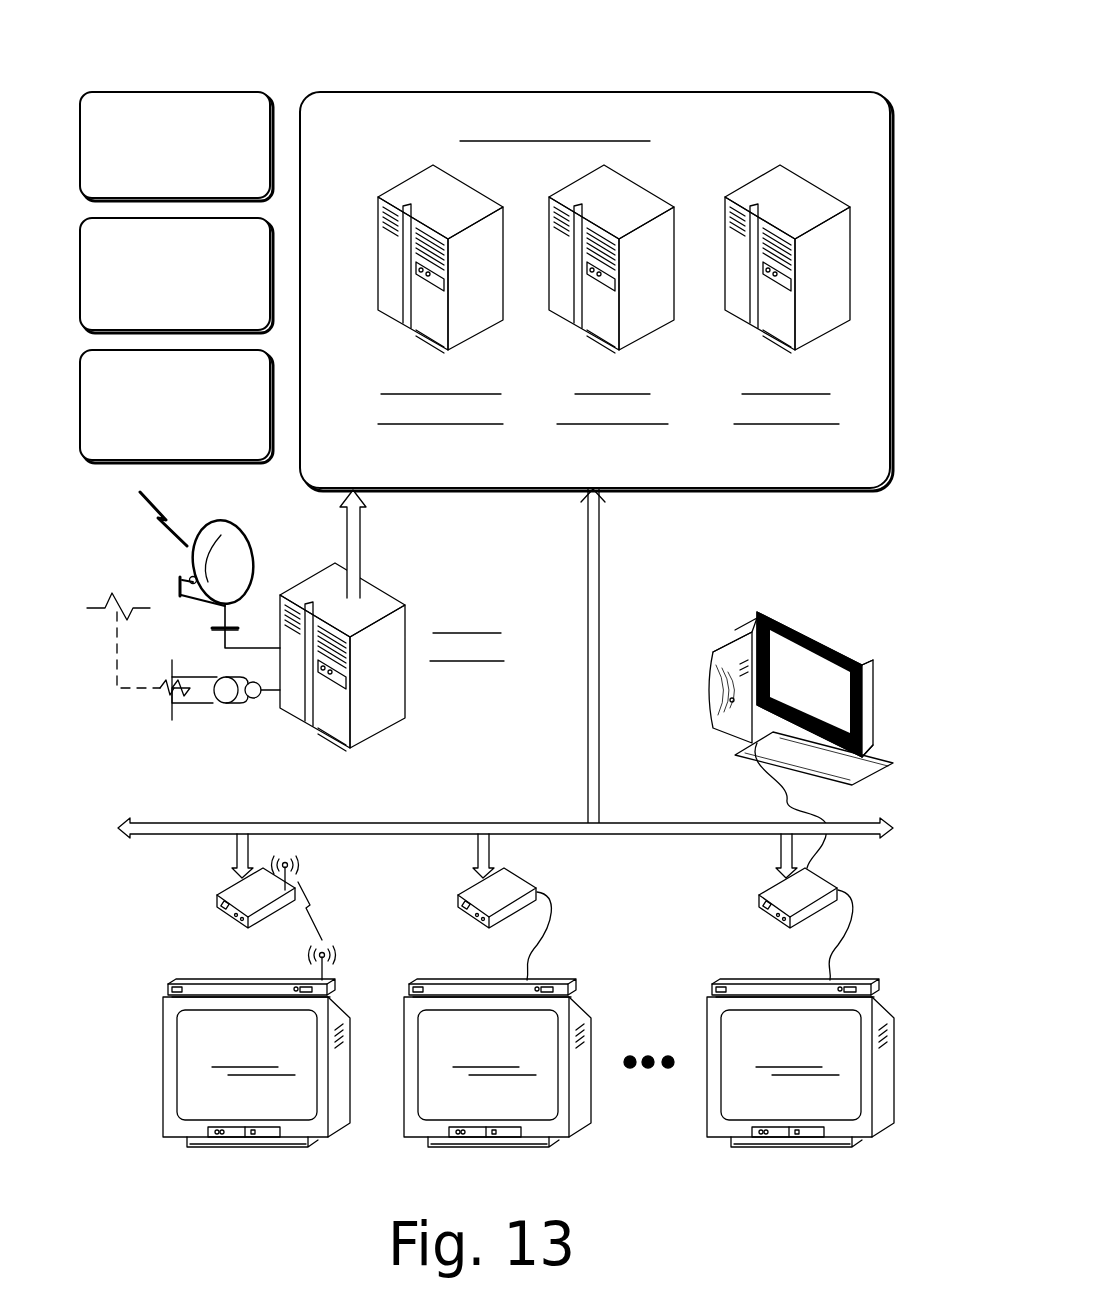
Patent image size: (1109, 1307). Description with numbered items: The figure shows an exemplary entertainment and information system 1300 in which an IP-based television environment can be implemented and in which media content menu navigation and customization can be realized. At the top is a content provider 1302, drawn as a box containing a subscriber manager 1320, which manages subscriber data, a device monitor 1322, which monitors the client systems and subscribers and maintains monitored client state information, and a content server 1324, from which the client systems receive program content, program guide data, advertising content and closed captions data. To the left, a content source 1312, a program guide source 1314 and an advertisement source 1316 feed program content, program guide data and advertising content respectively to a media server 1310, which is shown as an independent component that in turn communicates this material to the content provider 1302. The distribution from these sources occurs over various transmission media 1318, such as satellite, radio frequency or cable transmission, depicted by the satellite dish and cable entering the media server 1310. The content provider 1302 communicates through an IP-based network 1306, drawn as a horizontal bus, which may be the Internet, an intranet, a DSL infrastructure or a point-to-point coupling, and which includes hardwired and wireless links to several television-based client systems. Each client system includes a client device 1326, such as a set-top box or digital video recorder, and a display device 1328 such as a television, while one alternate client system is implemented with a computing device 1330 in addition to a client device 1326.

The entertainment and information system 1300 is at (702, 62).
The content provider 1302 is at (672, 141).
The IP-based network 1306 is at (408, 822).
The media server 1310 is at (497, 689).
The content source 1312 is at (150, 176).
The program guide source 1314 is at (150, 314).
The advertisement source 1316 is at (150, 446).
The transmission media 1318 is at (210, 720).
The subscriber manager 1320 is at (416, 453).
The device monitor 1322 is at (586, 453).
The content server 1324 is at (760, 453).
The client device 1326 is at (217, 980).
The display device 1328 is at (182, 1128).
The computing device 1330 is at (733, 637).